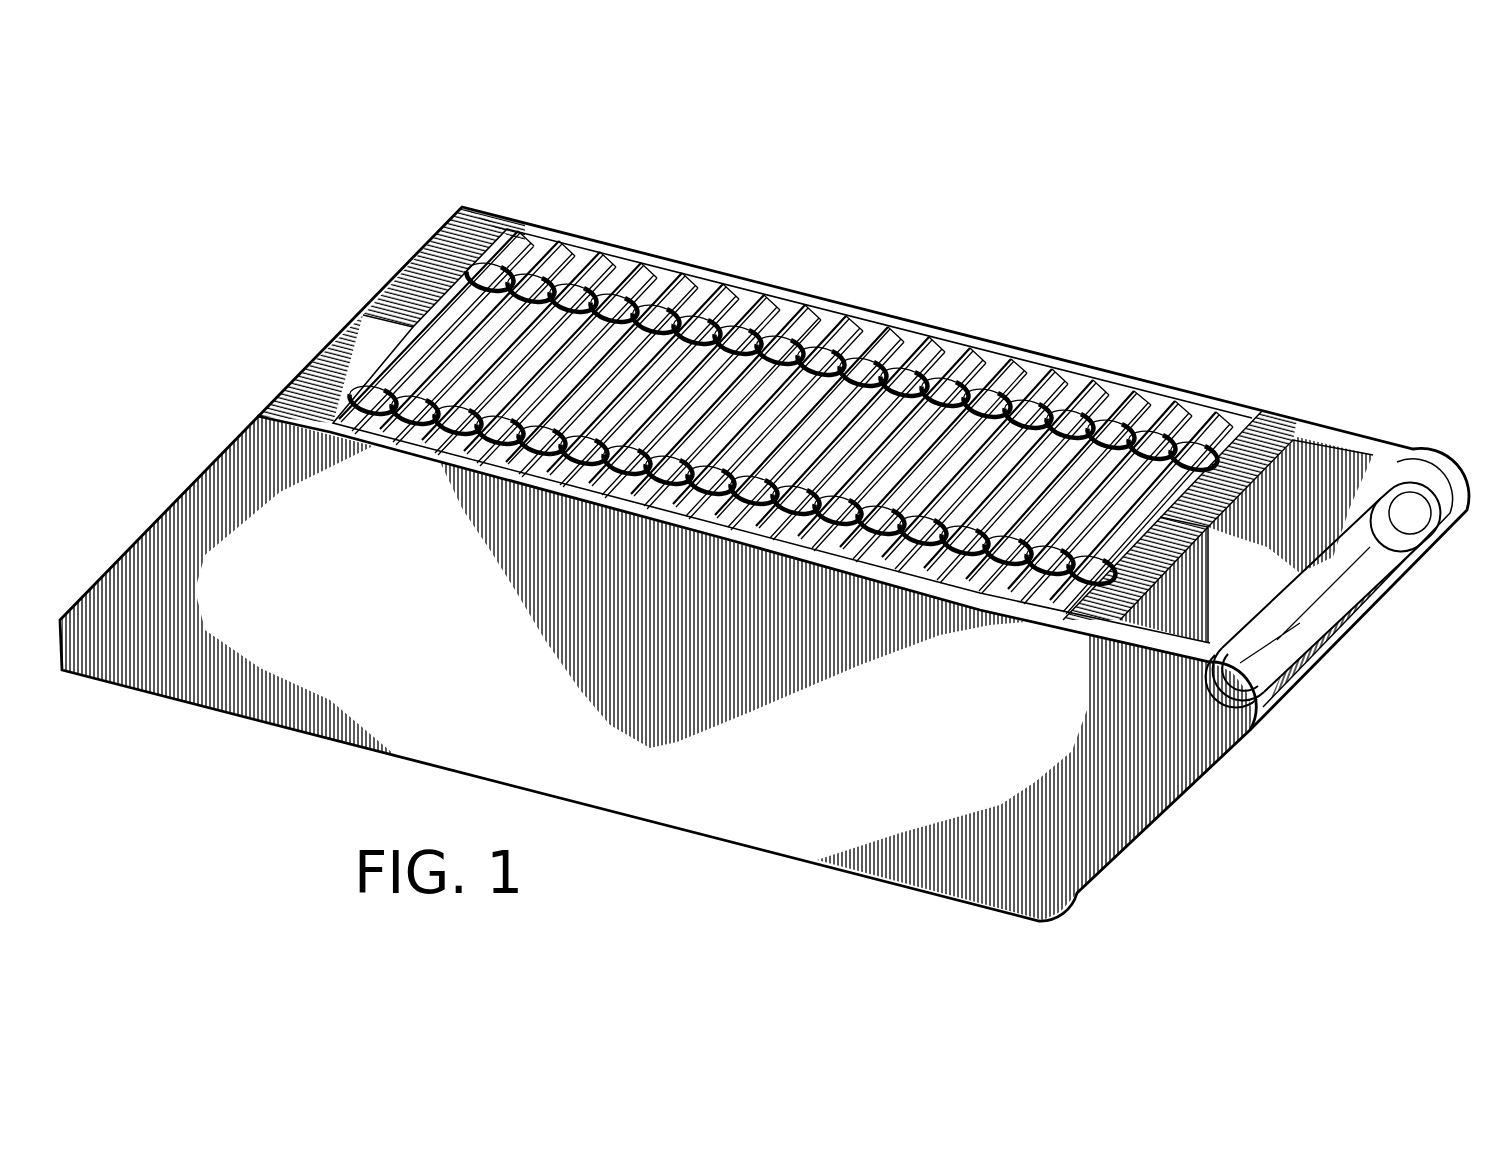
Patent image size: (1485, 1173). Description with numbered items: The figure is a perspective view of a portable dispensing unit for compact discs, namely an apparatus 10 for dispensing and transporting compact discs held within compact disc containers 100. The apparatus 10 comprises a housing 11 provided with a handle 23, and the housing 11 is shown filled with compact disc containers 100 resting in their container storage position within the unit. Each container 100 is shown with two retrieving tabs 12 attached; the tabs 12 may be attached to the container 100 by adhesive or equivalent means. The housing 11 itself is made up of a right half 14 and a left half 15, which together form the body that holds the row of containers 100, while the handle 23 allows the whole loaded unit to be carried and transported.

The apparatus 10 is at (913, 258).
The housing 11 is at (160, 522).
The retrieving tabs 12 is at (604, 303).
The right half 14 is at (1150, 818).
The left half 15 is at (1283, 414).
The handle 23 is at (1345, 600).
The compact disc container 100 is at (447, 327).